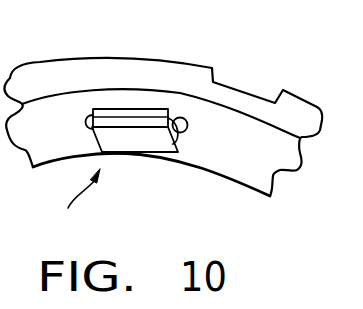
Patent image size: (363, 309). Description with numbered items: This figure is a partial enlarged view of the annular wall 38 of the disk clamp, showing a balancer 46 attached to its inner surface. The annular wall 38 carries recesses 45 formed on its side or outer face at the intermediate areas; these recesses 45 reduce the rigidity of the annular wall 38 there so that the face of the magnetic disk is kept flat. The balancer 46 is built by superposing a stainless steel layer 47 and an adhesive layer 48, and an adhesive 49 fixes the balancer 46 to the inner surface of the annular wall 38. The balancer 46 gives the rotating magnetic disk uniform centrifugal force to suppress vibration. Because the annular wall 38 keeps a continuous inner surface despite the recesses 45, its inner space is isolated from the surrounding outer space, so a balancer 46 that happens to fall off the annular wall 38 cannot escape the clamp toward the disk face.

The annular wall 38 is at (112, 68).
The recesses 45 is at (215, 72).
The balancer 46 is at (79, 203).
The stainless steel layer 47 is at (144, 140).
The adhesive layer 48 is at (115, 113).
The adhesive 49 is at (88, 120).